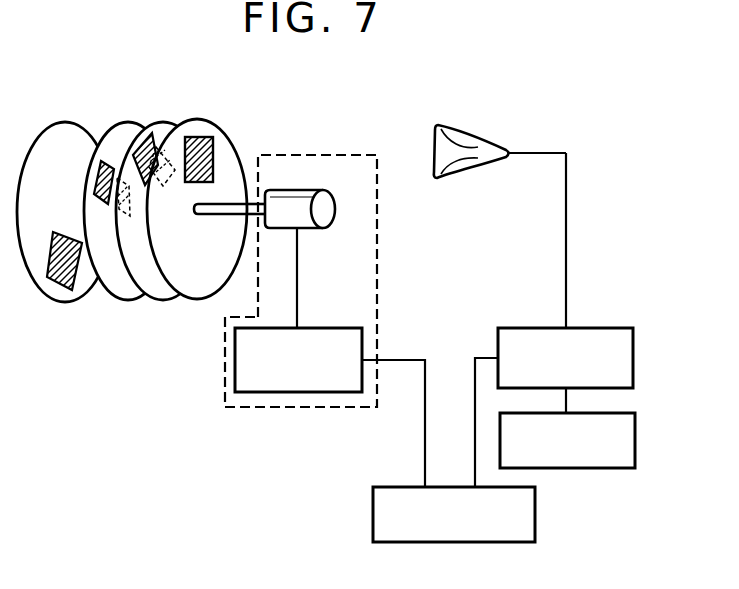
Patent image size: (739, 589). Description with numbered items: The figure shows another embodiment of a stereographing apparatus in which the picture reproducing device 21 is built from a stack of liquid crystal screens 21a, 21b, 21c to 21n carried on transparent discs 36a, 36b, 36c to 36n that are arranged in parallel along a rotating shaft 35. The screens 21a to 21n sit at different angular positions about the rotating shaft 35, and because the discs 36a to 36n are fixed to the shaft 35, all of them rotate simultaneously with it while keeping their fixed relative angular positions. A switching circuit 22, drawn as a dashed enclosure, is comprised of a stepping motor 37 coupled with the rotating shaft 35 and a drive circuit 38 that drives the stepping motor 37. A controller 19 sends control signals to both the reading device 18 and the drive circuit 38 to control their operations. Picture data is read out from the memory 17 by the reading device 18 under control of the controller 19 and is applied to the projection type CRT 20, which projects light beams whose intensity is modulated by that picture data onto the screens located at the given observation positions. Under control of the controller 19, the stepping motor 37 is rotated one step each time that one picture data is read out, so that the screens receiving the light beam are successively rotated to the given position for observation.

The picture reproducing device 21 is at (139, 192).
The screen 21a is at (215, 142).
The screen 21b is at (150, 191).
The screen 21c is at (94, 180).
The screen 21n is at (49, 282).
The transparent disc 36a is at (219, 122).
The transparent disc 36b is at (174, 125).
The transparent disc 36c is at (119, 124).
The transparent disc 36n is at (52, 122).
The rotating shaft 35 is at (233, 219).
The stepping motor 37 is at (326, 197).
The switching circuit 22 is at (279, 261).
The drive circuit 38 is at (235, 346).
The projection type CRT 20 is at (486, 148).
The reading device 18 is at (634, 346).
The memory 17 is at (636, 438).
The controller 19 is at (536, 514).